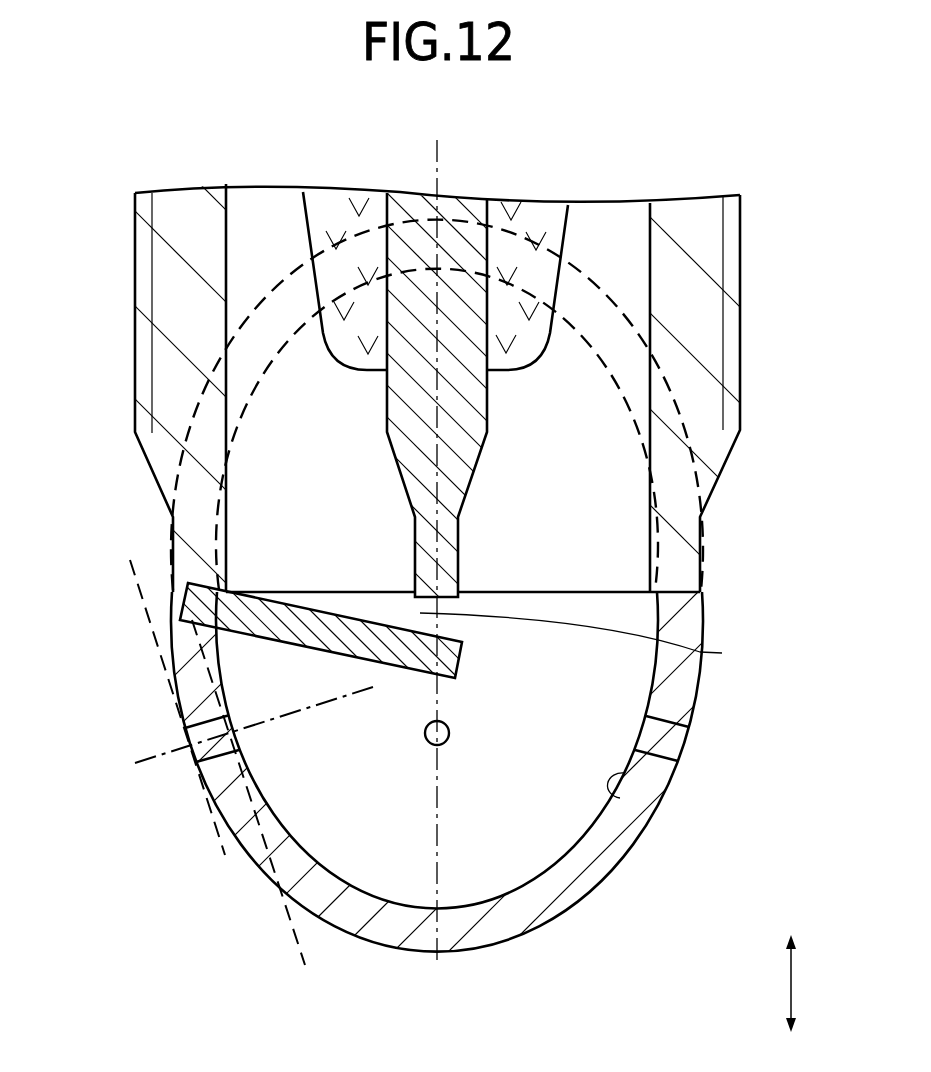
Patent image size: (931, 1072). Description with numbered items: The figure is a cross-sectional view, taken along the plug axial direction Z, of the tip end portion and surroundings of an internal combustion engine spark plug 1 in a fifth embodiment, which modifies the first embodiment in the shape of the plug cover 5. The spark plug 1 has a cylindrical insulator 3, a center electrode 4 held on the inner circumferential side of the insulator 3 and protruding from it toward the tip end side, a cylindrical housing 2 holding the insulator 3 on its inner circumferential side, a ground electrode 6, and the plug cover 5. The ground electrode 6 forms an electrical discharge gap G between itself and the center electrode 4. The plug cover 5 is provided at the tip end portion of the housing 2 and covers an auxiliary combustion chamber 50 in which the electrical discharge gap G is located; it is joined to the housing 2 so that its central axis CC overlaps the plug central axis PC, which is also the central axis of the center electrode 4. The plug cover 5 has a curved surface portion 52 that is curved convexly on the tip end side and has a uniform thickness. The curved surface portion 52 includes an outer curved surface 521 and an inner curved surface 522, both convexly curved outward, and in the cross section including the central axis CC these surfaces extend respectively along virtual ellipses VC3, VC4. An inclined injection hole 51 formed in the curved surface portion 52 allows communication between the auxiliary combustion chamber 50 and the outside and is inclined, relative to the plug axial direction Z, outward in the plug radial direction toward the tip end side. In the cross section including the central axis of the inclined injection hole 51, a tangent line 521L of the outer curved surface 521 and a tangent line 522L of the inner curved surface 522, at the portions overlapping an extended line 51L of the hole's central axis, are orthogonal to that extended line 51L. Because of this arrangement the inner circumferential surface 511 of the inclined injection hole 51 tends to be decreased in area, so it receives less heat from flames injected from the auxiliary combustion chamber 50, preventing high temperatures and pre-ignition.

The internal combustion engine spark plug 1 is at (113, 245).
The housing 2 is at (678, 240).
The insulator 3 is at (522, 235).
The center electrode 4 is at (418, 222).
The plug cover 5 is at (465, 536).
The auxiliary combustion chamber 50 is at (532, 550).
The inclined injection hole 51 is at (187, 757).
The inner circumferential surface 511 is at (670, 728).
The curved surface portion 52 is at (567, 880).
The outer curved surface 521 is at (633, 847).
The inner curved surface 522 is at (657, 810).
The ground electrode 6 is at (317, 612).
The electrical discharge gap G is at (583, 641).
The plug central axis PC is at (436, 537).
The central axis of the plug cover CC is at (437, 988).
The virtual ellipse VC3 is at (275, 373).
The virtual ellipse VC4 is at (300, 420).
The extended line 51L is at (226, 736).
The tangent line 521L is at (158, 693).
The tangent line 522L is at (270, 807).
The plug axial direction Z is at (803, 983).